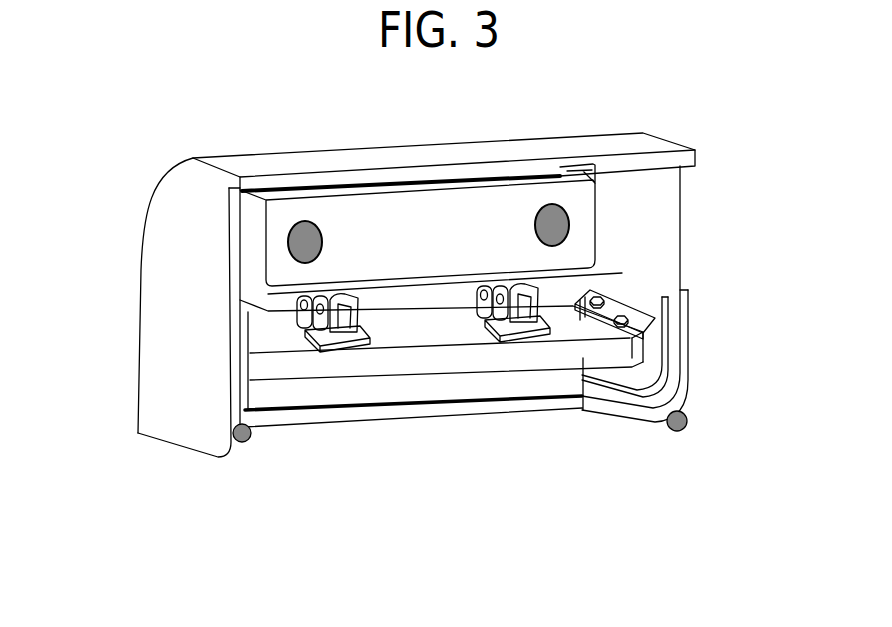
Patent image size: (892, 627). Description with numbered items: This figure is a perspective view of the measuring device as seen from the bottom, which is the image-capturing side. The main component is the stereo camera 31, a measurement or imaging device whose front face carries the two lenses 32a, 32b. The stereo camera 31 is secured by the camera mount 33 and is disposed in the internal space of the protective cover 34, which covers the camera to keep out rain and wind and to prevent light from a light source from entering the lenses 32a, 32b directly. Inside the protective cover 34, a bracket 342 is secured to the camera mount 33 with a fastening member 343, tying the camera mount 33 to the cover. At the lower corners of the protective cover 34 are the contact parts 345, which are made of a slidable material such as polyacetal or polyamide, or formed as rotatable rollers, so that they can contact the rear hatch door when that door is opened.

The stereo camera 31 is at (432, 223).
The lens 32a is at (303, 220).
The lens 32b is at (550, 203).
The camera mount 33 is at (277, 337).
The protective cover 34 is at (165, 170).
The bracket 342 is at (612, 312).
The fastening member 343 is at (597, 300).
The contact part 345 is at (242, 442).